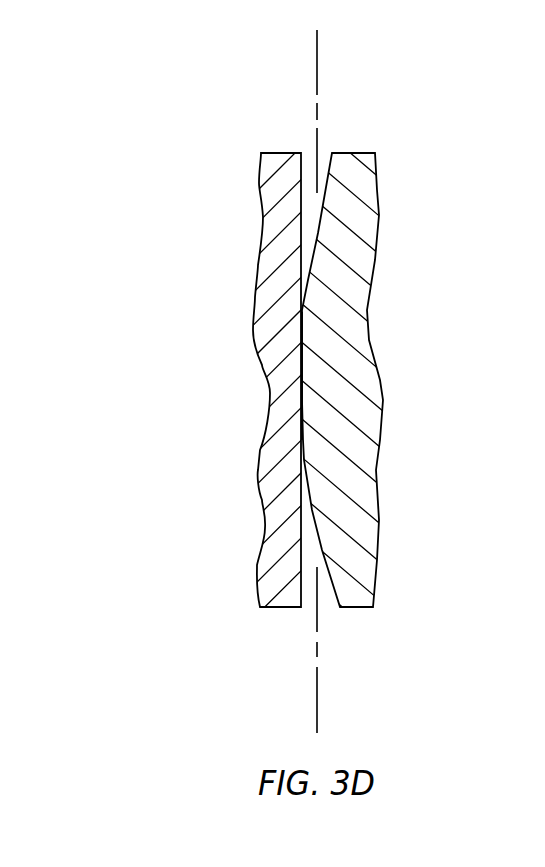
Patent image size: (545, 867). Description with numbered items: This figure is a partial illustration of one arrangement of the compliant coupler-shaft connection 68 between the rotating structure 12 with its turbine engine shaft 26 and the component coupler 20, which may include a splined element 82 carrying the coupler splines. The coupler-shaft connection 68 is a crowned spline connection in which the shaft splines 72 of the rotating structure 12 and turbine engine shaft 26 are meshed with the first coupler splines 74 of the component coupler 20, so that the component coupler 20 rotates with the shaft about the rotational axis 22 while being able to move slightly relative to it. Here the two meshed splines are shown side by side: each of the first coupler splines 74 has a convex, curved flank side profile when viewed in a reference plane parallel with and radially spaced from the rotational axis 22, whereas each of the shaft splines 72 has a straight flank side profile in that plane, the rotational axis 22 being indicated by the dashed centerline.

The rotational axis 22 is at (314, 37).
The shaft splines 72 is at (283, 153).
The first coupler splines 74 is at (348, 153).
The rotating structure 12 is at (272, 341).
The turbine engine shaft 26 is at (272, 341).
The component coupler 20 is at (403, 365).
The splined element 82 is at (403, 365).
The coupler-shaft connection 68 is at (329, 618).